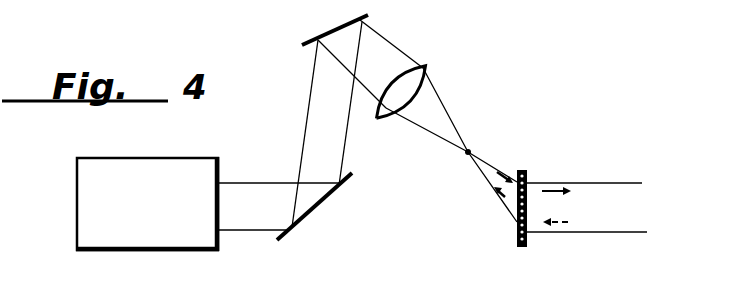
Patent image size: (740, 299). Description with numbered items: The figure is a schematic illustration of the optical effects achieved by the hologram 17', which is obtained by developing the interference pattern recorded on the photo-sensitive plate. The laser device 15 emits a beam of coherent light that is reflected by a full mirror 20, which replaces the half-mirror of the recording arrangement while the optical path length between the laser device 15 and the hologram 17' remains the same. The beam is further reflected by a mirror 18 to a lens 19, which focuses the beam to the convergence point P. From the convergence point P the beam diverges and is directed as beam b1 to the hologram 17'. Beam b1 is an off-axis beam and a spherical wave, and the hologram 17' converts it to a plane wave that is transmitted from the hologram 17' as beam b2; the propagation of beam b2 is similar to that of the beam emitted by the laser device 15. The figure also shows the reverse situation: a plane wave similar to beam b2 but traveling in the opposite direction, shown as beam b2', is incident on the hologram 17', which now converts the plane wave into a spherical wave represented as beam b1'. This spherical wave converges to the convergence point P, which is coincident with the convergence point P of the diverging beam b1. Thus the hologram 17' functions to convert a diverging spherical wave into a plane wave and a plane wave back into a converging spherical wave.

The laser device 15 is at (118, 151).
The mirror 18 is at (312, 37).
The lens 19 is at (425, 67).
The full mirror 20 is at (310, 213).
The convergence point P is at (466, 155).
The hologram 17' is at (522, 234).
The beam b1 is at (511, 153).
The beam b1' is at (482, 225).
The beam b2 is at (584, 170).
The beam b2' is at (587, 256).